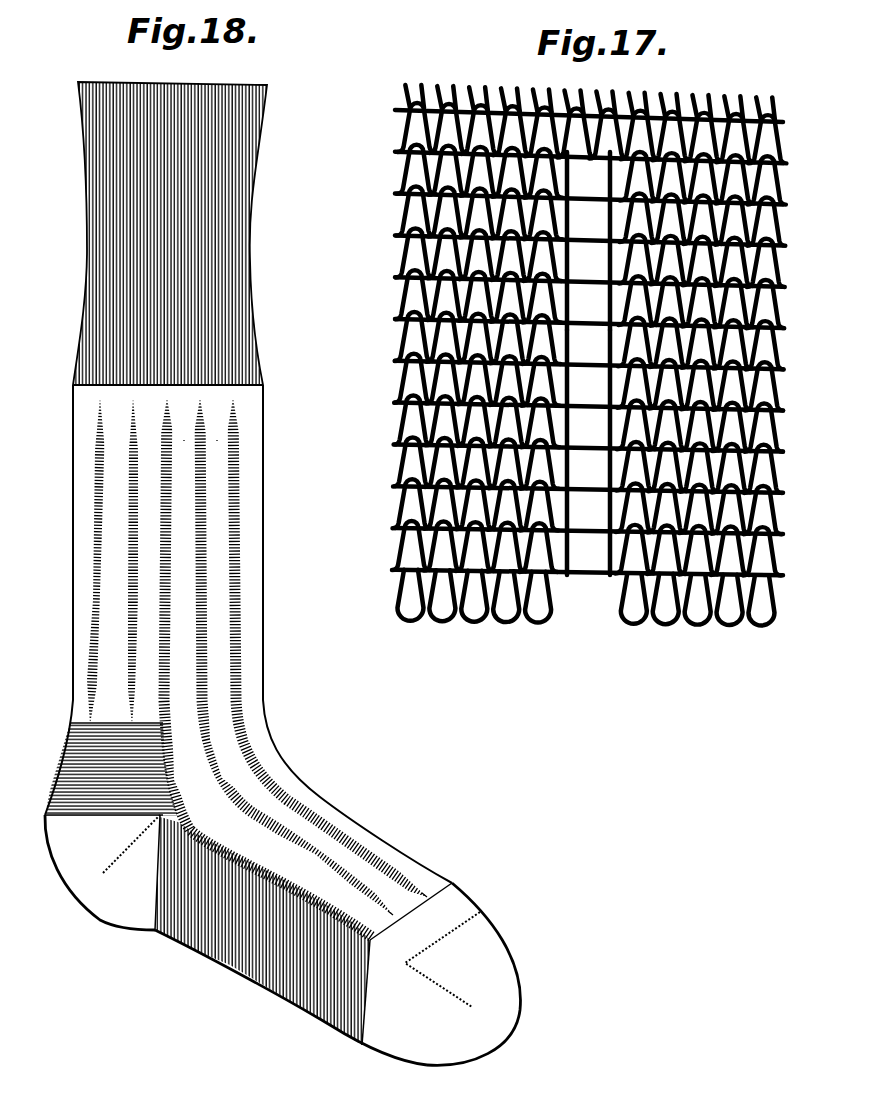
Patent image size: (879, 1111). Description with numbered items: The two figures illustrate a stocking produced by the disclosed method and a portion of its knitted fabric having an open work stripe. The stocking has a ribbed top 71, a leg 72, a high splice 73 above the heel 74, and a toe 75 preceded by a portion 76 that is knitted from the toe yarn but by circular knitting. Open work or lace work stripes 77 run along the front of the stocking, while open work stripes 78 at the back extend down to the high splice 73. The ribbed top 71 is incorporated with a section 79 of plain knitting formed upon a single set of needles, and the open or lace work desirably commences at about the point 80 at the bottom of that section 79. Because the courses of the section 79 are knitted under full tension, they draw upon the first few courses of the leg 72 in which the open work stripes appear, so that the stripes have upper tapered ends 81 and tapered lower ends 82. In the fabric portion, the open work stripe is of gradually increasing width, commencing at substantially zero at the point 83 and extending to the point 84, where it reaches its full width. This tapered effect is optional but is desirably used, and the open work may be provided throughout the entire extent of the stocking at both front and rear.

In FIG. 18, the ribbed top 71 is at (230, 238).
In FIG. 18, the leg 72 is at (248, 538).
In FIG. 17, the leg 72 is at (750, 385).
In FIG. 18, the high splice 73 is at (70, 750).
In FIG. 18, the heel 74 is at (87, 880).
In FIG. 18, the toe 75 is at (503, 1022).
In FIG. 18, the portion knitted from the toe yarn 76 is at (460, 902).
In FIG. 18, the open work or lace work stripes 77 is at (168, 617).
In FIG. 18, the open work stripes or lace work stripes 78 is at (133, 597).
In FIG. 18, the section of plain knitting 79 is at (85, 390).
In FIG. 17, the section of plain knitting 79 is at (779, 105).
In FIG. 18, the point 80 is at (238, 403).
In FIG. 18, the upper tapered ends 81 is at (187, 420).
In FIG. 18, the tapered lower ends 82 is at (378, 919).
In FIG. 17, the point 83 is at (588, 197).
In FIG. 17, the point 84 is at (588, 445).